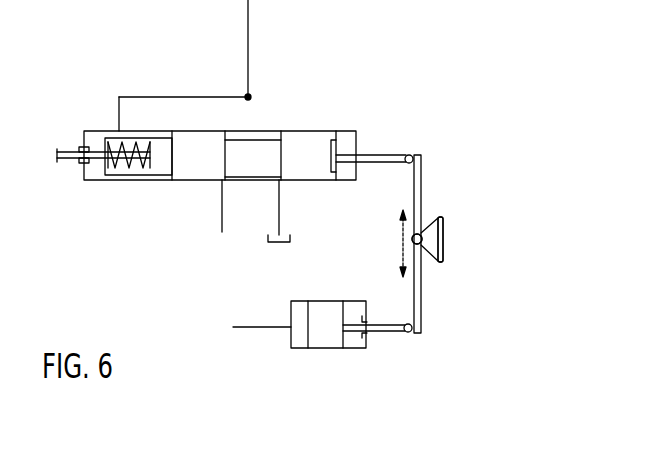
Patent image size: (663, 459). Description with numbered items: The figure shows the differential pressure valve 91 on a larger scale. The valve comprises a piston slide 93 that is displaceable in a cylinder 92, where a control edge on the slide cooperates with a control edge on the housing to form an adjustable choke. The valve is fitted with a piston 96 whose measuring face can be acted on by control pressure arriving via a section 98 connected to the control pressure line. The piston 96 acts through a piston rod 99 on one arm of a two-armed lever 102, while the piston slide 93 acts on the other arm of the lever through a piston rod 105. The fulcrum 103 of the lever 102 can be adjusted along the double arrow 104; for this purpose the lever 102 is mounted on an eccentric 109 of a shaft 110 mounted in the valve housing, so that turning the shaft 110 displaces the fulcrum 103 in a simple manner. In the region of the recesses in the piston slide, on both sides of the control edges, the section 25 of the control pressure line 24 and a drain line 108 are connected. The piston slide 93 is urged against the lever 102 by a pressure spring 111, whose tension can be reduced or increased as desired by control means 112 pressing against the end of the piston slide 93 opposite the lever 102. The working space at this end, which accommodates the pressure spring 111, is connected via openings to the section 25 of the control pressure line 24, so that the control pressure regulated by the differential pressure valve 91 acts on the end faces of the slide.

The control pressure line 24 is at (218, 215).
The section of the control pressure line 25 is at (248, 24).
The differential pressure valve 91 is at (180, 196).
The cylinder 92 is at (270, 131).
The piston slide 93 is at (308, 142).
The piston 96 is at (324, 338).
The section connected to the control pressure line 98 is at (260, 328).
The piston rod 99 is at (389, 333).
The two-armed lever 102 is at (421, 190).
The fulcrum 103 is at (443, 257).
The double arrow 104 is at (397, 255).
The piston rod 105 is at (388, 153).
The drain line 108 is at (279, 216).
The eccentric 109 is at (417, 239).
The shaft 110 is at (440, 239).
The pressure spring 111 is at (119, 165).
The control means 112 is at (66, 147).